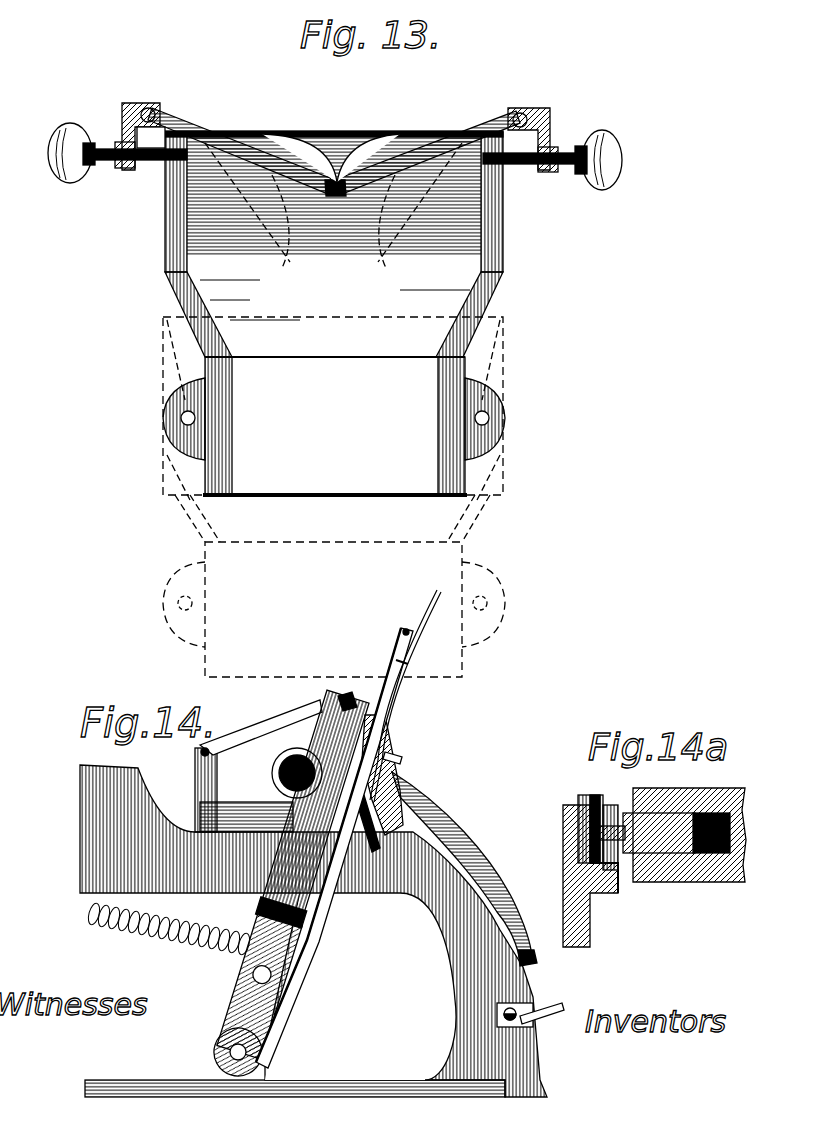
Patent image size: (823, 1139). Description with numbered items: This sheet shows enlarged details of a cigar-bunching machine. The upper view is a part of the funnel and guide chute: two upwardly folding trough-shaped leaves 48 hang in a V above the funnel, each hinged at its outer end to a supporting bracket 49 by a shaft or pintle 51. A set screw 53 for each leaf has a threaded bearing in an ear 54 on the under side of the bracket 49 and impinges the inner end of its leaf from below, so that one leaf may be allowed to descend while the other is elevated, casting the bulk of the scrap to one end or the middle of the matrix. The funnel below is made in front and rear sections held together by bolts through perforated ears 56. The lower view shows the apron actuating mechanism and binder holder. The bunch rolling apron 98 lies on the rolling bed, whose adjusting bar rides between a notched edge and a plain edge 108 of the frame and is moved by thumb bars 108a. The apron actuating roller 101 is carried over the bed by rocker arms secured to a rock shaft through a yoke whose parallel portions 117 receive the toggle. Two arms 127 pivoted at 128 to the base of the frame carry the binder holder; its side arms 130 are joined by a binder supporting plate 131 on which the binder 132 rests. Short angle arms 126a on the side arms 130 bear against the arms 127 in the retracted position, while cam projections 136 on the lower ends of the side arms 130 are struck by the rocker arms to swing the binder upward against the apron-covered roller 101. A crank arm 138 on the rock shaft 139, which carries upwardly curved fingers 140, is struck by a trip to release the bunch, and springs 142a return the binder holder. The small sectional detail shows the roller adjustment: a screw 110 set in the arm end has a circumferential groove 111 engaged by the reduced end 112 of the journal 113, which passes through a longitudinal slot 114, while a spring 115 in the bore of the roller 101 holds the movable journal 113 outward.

In FIG. 13, the trough shaped leaves 48 is at (270, 140).
In FIG. 13, the supporting bracket 49 is at (552, 120).
In FIG. 13, the shafts or pintles 51 is at (527, 116).
In FIG. 13, the set screws 53 is at (73, 177).
In FIG. 13, the ears 54 is at (127, 160).
In FIG. 13, the perforated ears 56 is at (178, 432).
In FIG. 14, the bunch rolling apron 98 is at (258, 766).
In FIG. 14, the plain edge 108 is at (313, 931).
In FIG. 14, the thumb bars 108a is at (382, 893).
In FIG. 14, the screws 110 is at (347, 694).
In FIG. 14A, the screws 110 is at (578, 800).
In FIG. 14A, the circumferential grooves 111 is at (564, 836).
In FIG. 14A, the reduced ends 112 is at (620, 806).
In FIG. 14A, the journals 113 is at (645, 833).
In FIG. 14A, the longitudinal slots 114 is at (617, 872).
In FIG. 14A, the spring 115 is at (717, 860).
In FIG. 14A, the apron actuating roller 101 is at (689, 835).
In FIG. 14, the parallel portions 117 is at (243, 1022).
In FIG. 14, the short angle arms 126a is at (403, 758).
In FIG. 14, the arms 127 is at (308, 920).
In FIG. 14, the pivot 128 is at (268, 1068).
In FIG. 14, the side arms 130 is at (393, 714).
In FIG. 14, the binder supporting plate 131 is at (405, 662).
In FIG. 14, the binder 132 is at (388, 636).
In FIG. 14, the cam projections 136 is at (402, 808).
In FIG. 14, the crank arm 138 is at (533, 1003).
In FIG. 14, the rock shaft 139 is at (535, 1030).
In FIG. 14, the upwardly curved fingers 140 is at (562, 1005).
In FIG. 14, the springs 142a is at (183, 935).